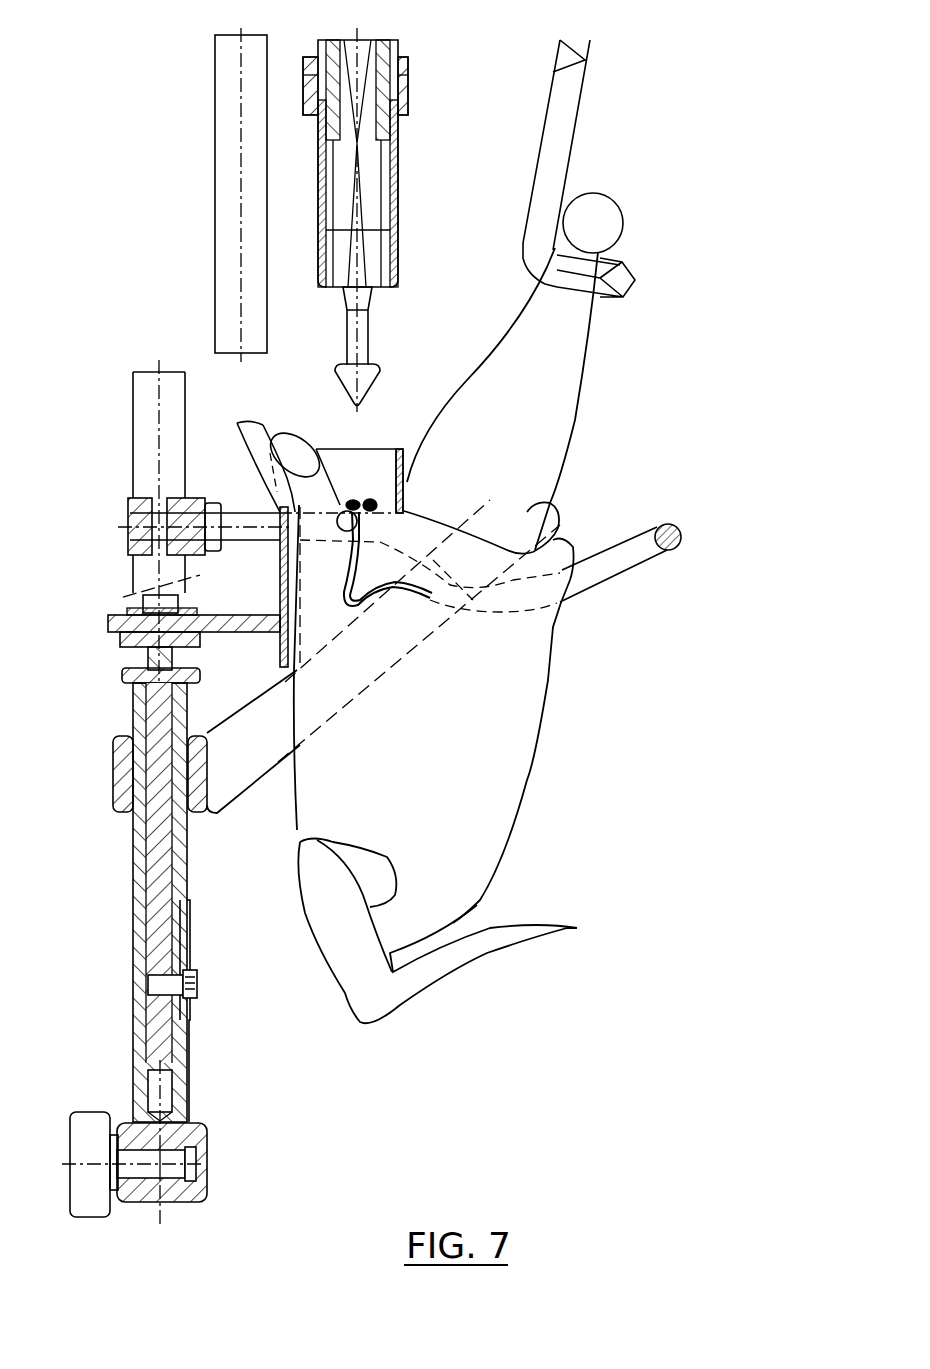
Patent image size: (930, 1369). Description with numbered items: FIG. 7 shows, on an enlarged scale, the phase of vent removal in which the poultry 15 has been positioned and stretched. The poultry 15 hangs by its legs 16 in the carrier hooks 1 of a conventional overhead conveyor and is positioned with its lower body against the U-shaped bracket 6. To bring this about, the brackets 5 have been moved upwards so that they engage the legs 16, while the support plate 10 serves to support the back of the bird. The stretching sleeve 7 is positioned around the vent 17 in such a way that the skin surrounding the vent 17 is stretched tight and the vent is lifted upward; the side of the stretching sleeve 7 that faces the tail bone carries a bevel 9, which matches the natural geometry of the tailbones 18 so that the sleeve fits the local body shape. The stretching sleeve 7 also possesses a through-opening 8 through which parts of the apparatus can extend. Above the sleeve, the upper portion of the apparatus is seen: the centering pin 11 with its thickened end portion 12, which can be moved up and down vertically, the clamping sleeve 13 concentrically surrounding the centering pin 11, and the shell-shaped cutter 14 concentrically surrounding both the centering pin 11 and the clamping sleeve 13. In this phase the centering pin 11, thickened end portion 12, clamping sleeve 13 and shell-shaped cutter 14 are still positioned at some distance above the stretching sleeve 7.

The carrying hook 1 is at (565, 107).
The bracket 5 is at (233, 780).
The U-shaped bracket 6 is at (628, 557).
The stretching sleeve 7 is at (384, 450).
The through-opening 8 is at (343, 458).
The bevel 9 is at (300, 505).
The support plate 10 is at (282, 557).
The centering pin 11 is at (380, 327).
The thickened end portion 12 is at (380, 383).
The clamping sleeve 13 is at (385, 185).
The shell-shaped cutter 14 is at (392, 267).
The poultry 15 is at (508, 770).
The legs 16 is at (565, 340).
The vent 17 is at (405, 492).
The tailbones 18 is at (298, 477).